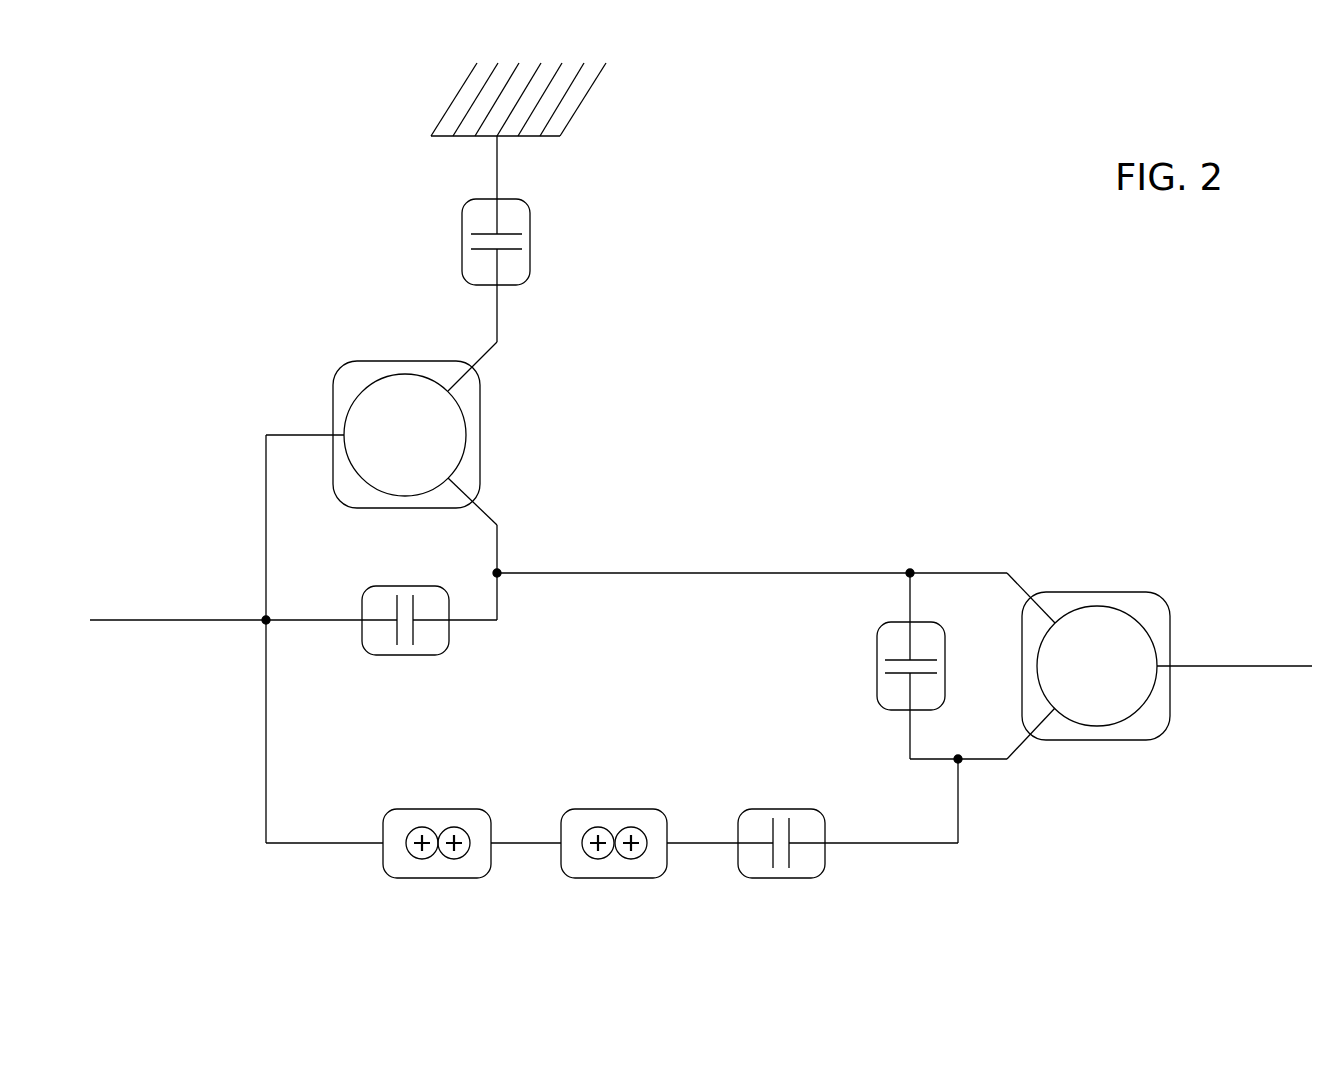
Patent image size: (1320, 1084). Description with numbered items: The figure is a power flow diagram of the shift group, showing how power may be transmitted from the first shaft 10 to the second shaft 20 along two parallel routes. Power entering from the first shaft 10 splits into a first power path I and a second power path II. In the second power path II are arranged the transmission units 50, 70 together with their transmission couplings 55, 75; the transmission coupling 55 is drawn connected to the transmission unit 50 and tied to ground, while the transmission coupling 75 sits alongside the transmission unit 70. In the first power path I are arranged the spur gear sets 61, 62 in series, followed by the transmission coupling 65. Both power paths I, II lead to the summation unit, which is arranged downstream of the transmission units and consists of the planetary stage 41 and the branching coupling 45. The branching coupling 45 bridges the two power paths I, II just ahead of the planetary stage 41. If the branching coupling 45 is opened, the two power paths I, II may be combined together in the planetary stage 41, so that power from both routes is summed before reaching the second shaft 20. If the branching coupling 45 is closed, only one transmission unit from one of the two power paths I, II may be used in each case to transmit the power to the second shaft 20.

The first shaft 10 is at (134, 620).
The second shaft 20 is at (1248, 666).
The planetary stage 41 is at (1117, 592).
The branching coupling 45 is at (877, 672).
The transmission unit 50 is at (355, 338).
The transmission coupling 55 is at (530, 250).
The spur gear set 61 is at (423, 809).
The spur gear set 62 is at (595, 809).
The transmission coupling 65 is at (766, 809).
The transmission unit 70 is at (381, 588).
The transmission coupling 75 is at (355, 572).
The first power path I is at (882, 843).
The second power path II is at (696, 573).